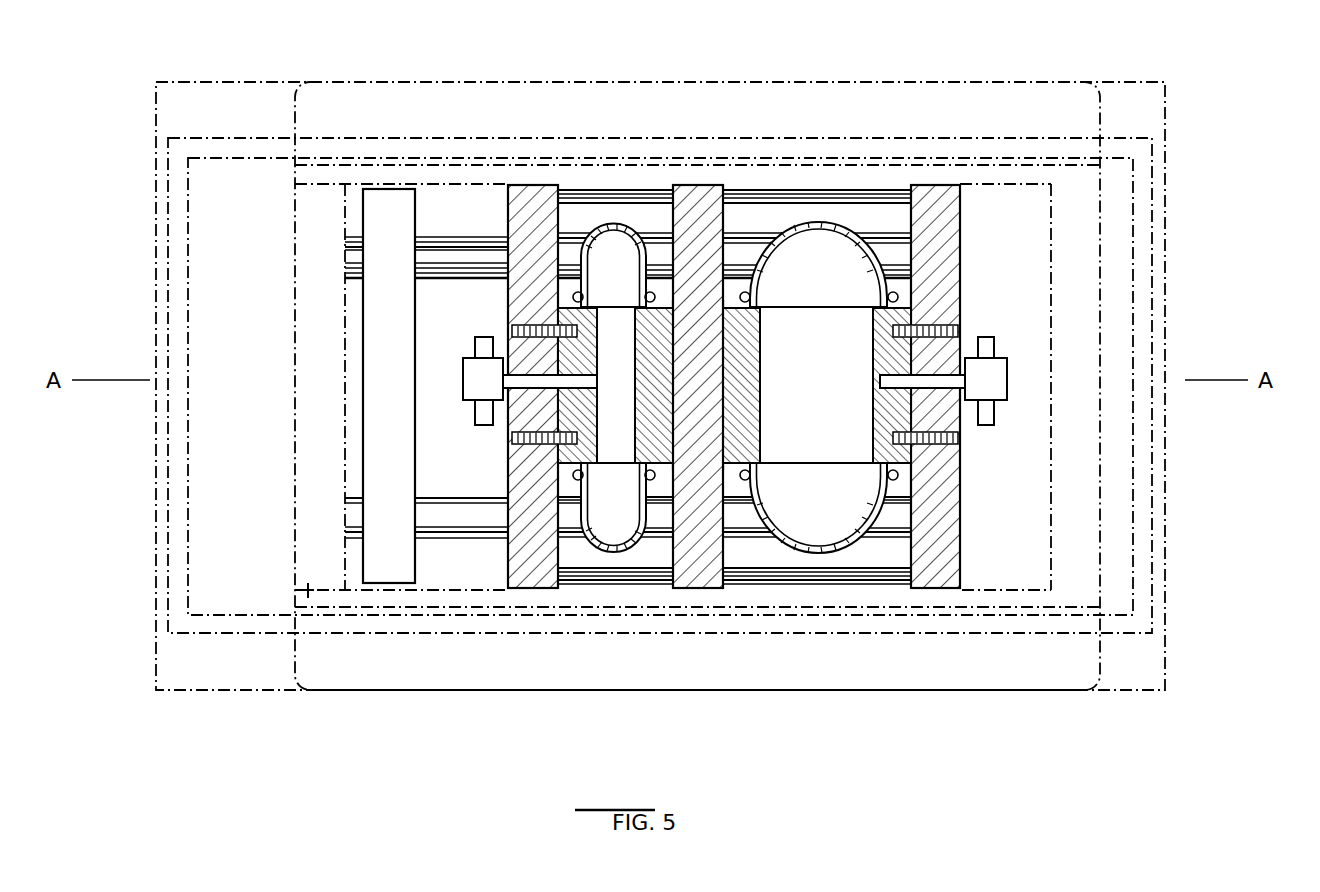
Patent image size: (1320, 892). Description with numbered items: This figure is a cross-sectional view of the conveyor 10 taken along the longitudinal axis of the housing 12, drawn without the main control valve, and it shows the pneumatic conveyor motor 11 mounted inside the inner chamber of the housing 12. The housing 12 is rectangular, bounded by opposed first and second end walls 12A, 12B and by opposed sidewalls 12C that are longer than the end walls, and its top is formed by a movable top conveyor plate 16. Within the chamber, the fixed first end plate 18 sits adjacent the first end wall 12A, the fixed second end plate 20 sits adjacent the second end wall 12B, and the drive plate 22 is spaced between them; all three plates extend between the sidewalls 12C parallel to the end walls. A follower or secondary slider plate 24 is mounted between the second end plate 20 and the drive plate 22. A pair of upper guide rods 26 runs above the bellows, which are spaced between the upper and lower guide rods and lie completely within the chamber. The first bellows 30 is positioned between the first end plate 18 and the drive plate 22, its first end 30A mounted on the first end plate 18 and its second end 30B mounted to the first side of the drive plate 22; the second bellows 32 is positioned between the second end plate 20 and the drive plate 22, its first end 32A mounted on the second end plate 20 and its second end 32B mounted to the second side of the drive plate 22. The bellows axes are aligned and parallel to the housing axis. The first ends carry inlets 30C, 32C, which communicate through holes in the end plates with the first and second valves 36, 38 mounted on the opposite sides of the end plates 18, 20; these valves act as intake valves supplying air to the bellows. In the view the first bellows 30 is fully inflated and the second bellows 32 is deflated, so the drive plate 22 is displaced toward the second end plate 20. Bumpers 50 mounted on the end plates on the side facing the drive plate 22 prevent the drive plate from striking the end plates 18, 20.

The conveyor 10 is at (582, 46).
The pneumatic conveyor motor 11 is at (955, 200).
The housing 12 is at (790, 82).
The first end wall 12A is at (1080, 517).
The second end wall 12B is at (307, 622).
The sidewalls 12C is at (510, 600).
The movable top conveyor plate 16 is at (1150, 105).
The first end plate 18 is at (935, 233).
The second end plate 20 is at (510, 283).
The drive plate 22 is at (707, 205).
The follower plate 24 is at (378, 317).
The upper guide rods 26 is at (450, 253).
The first bellows 30 is at (915, 258).
The first end of first bellows 30A is at (905, 305).
The second end of first bellows 30B is at (740, 398).
The inlet of first bellows 30C is at (986, 420).
The second bellows 32 is at (567, 487).
The first end of second bellows 32A is at (563, 415).
The second end of second bellows 32B is at (752, 339).
The inlet of second bellows 32C is at (527, 368).
The first valve 36 is at (1000, 386).
The second valve 38 is at (470, 390).
The bumpers 50 is at (840, 563).